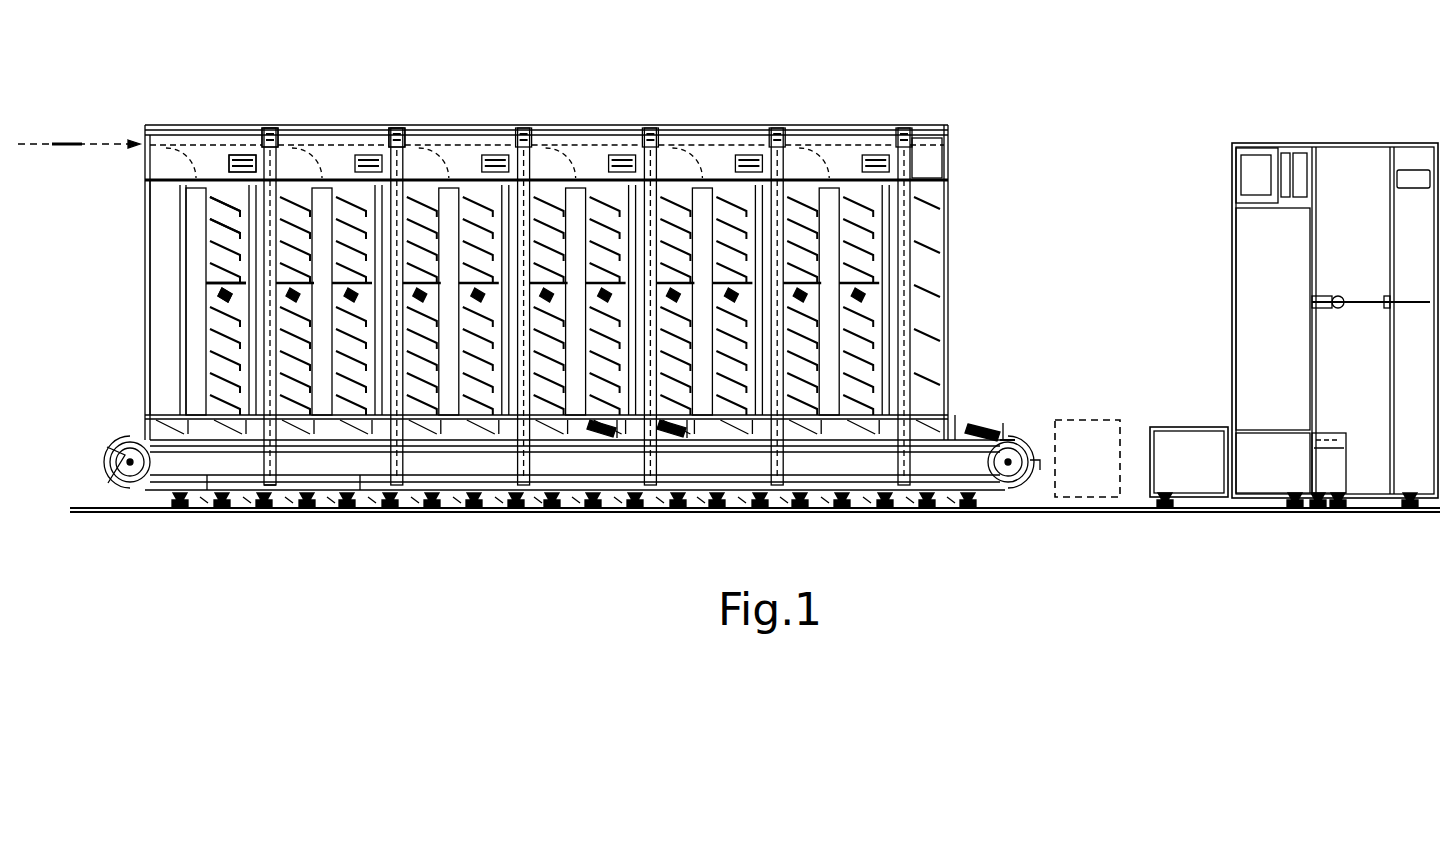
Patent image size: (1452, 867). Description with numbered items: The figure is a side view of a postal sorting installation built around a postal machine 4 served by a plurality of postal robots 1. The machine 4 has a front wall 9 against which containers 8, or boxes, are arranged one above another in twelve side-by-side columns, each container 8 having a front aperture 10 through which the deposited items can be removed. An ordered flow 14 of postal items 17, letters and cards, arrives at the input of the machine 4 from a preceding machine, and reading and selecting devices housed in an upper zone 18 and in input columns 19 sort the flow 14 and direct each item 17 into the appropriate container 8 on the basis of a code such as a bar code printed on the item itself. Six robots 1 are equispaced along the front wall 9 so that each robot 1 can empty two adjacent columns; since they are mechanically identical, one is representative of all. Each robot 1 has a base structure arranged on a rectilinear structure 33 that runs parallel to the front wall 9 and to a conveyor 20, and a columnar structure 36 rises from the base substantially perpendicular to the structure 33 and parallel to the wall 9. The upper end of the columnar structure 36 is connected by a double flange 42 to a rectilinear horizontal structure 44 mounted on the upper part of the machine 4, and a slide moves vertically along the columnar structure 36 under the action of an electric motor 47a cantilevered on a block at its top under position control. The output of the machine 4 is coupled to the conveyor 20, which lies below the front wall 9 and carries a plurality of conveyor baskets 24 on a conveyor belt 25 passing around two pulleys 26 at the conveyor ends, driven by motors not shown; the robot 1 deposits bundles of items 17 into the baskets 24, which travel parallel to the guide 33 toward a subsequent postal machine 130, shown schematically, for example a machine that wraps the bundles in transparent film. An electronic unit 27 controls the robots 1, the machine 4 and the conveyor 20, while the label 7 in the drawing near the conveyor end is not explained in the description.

The postal robot 1 is at (288, 133).
The postal machine 4 is at (692, 128).
The conveyor end 7 is at (1037, 452).
The container 8 is at (222, 225).
The front wall 9 is at (168, 200).
The front aperture 10 is at (218, 200).
The ordered flow 14 is at (97, 142).
The postal item 17 is at (70, 160).
The upper zone 18 is at (948, 165).
The input column 19 is at (240, 310).
The conveyor 20 is at (960, 408).
The conveyor basket 24 is at (848, 440).
The conveyor belt 25 is at (1012, 443).
The pulley 26 is at (135, 490).
The electronic unit 27 is at (1343, 188).
The rectilinear structure 33 is at (375, 482).
The columnar structure 36 is at (280, 465).
The double flange 42 is at (268, 140).
The rectilinear horizontal structure 44 is at (470, 140).
The electric motor 47a is at (243, 150).
The subsequent postal machine 130 is at (1088, 492).